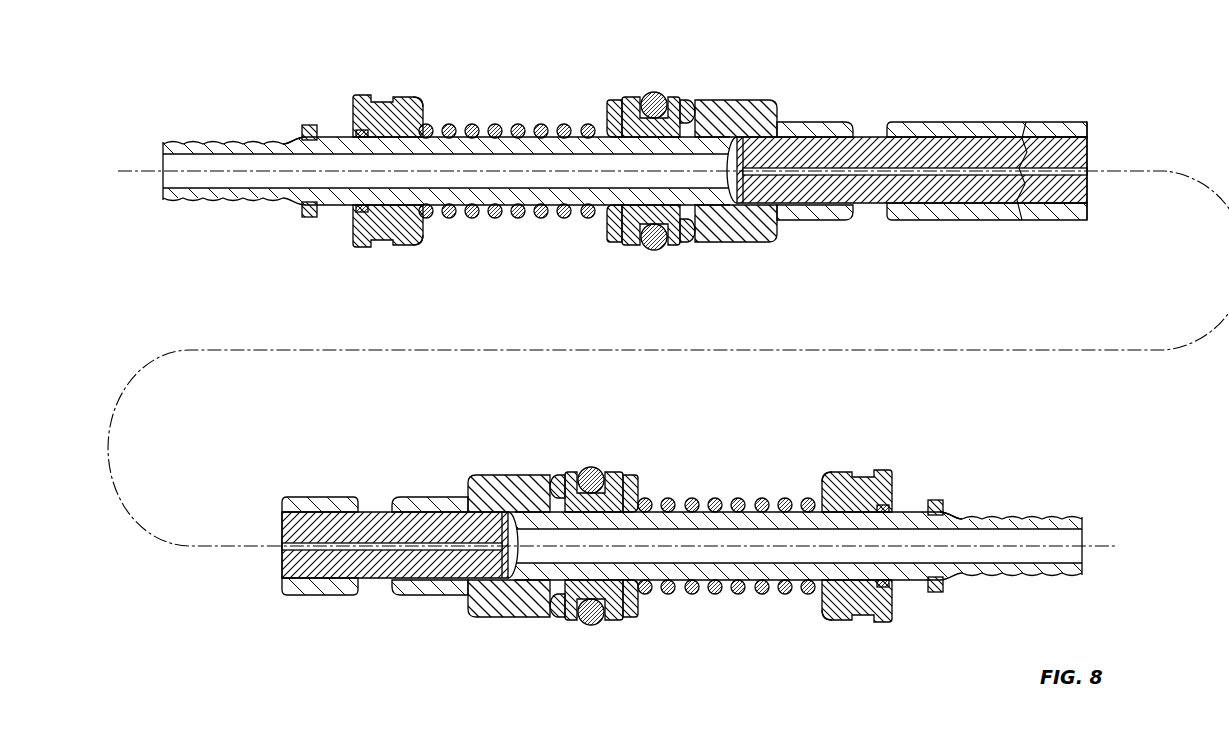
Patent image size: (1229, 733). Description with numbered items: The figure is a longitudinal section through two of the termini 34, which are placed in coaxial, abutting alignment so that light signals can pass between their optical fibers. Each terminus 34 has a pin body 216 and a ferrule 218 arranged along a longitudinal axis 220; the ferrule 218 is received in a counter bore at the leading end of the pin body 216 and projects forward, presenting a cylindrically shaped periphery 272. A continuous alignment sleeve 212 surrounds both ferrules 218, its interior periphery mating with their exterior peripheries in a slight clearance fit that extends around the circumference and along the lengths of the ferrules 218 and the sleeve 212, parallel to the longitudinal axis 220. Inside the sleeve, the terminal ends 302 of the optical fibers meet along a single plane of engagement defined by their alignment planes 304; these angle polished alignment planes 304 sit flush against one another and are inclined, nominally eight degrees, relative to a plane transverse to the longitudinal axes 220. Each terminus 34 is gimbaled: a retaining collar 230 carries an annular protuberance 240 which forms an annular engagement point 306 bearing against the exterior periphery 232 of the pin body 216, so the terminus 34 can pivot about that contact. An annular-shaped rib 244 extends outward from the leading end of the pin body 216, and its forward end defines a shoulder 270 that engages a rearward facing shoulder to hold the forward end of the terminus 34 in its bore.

The termini 34 is at (234, 99).
The alignment sleeve 212 is at (923, 128).
The pin body 216 is at (290, 138).
The ferrule 218 is at (865, 147).
The longitudinal axis 220 is at (160, 157).
The retaining collar 230 is at (393, 100).
The exterior periphery 232 is at (307, 124).
The protuberance 240 is at (412, 99).
The rib 244 is at (766, 108).
The shoulder 270 is at (778, 117).
The cylindrically shaped periphery 272 is at (378, 503).
The terminal end 302 is at (1067, 113).
The alignment plane 304 is at (1025, 140).
The annular engagement point 306 is at (363, 134).